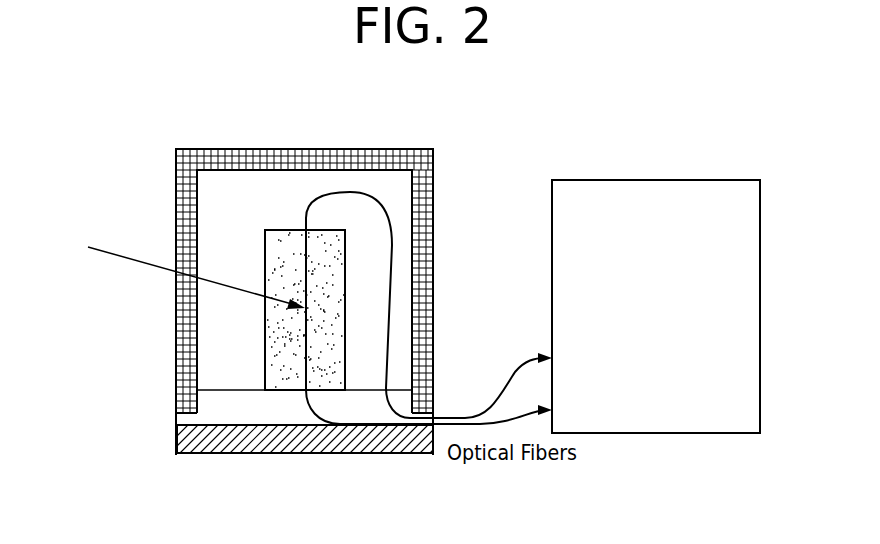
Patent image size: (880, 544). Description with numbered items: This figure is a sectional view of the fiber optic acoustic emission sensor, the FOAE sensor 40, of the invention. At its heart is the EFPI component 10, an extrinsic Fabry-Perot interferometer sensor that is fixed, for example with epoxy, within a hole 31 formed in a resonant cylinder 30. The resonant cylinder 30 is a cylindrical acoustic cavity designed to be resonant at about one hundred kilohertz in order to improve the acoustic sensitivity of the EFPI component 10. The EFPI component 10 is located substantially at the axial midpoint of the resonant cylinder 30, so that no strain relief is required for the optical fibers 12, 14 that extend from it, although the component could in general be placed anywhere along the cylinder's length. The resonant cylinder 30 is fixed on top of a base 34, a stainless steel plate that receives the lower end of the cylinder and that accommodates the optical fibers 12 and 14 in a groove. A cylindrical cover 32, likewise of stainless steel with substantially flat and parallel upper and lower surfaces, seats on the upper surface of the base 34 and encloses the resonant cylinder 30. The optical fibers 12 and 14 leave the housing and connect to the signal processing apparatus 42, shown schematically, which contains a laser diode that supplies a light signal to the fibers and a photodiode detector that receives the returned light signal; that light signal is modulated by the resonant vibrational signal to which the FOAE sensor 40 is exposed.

The EFPI component 10 is at (292, 335).
The optical fiber 12 is at (547, 410).
The optical fiber 14 is at (497, 395).
The resonant cylinder 30 is at (263, 245).
The hole 31 is at (309, 230).
The cylindrical cover 32 is at (155, 149).
The base 34 is at (198, 443).
The FOAE sensor 40 is at (444, 124).
The signal processing apparatus 42 is at (712, 203).